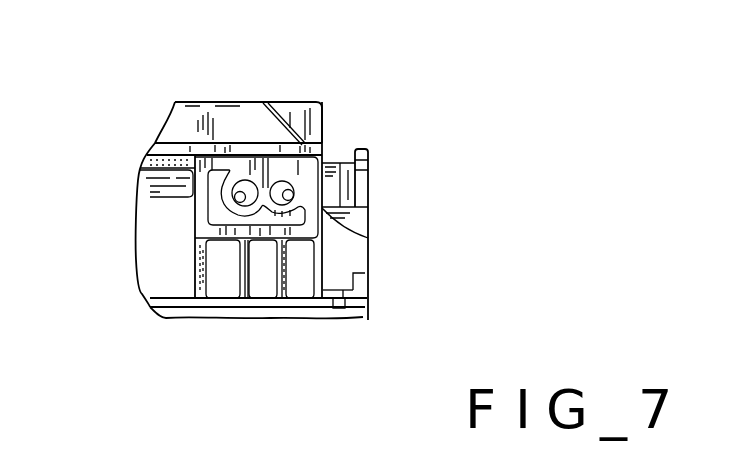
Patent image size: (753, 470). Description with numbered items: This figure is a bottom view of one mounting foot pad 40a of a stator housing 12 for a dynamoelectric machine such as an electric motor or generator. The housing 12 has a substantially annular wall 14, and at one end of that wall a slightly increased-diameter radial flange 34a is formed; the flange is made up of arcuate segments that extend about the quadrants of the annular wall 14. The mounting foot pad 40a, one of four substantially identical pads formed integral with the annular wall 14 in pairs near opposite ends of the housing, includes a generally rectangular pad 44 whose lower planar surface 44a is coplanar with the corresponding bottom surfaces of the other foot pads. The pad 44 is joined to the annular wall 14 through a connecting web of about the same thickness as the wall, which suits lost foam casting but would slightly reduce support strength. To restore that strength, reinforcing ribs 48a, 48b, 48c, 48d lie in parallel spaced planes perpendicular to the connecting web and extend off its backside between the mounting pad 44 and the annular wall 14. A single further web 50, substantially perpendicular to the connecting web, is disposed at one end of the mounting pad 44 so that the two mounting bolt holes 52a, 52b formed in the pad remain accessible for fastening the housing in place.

The stator housing 12 is at (329, 105).
The annular wall 14 is at (225, 101).
The radial flange 34a is at (365, 150).
The mounting foot pad 40a is at (248, 142).
The rectangular pad 44 is at (335, 186).
The bottom planar surface 44a is at (283, 166).
The reinforcing rib 48a is at (325, 272).
The reinforcing rib 48b is at (279, 277).
The reinforcing rib 48c is at (241, 272).
The reinforcing rib 48d is at (196, 277).
The web 50 is at (193, 197).
The mounting bolt hole 52a is at (297, 201).
The mounting bolt hole 52b is at (240, 190).